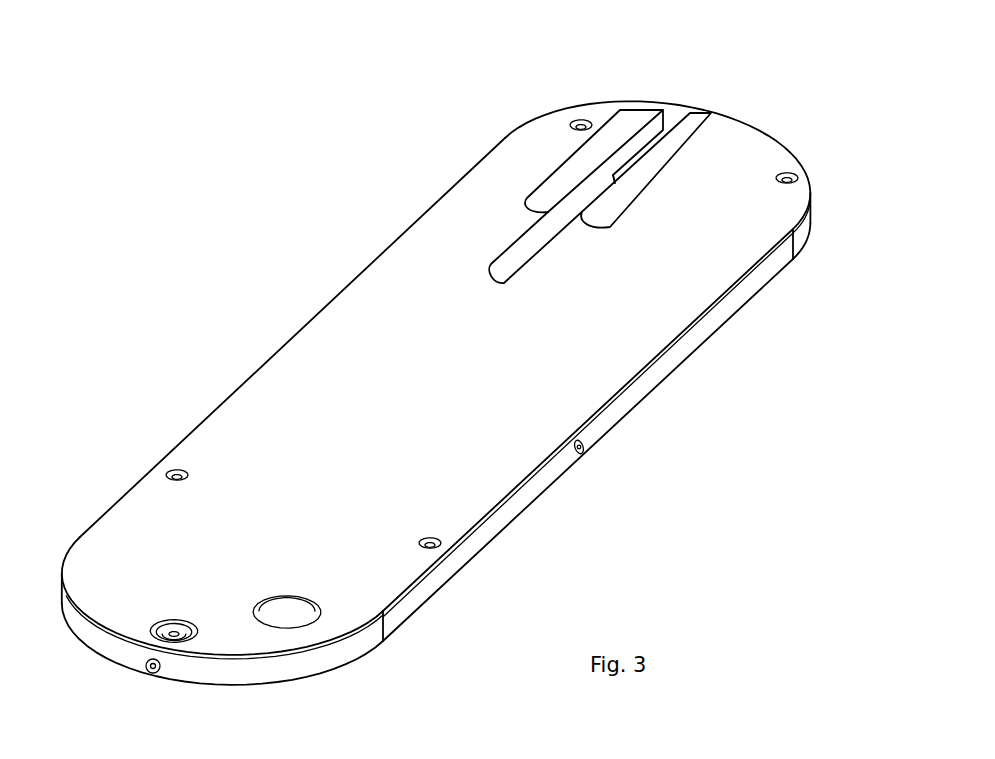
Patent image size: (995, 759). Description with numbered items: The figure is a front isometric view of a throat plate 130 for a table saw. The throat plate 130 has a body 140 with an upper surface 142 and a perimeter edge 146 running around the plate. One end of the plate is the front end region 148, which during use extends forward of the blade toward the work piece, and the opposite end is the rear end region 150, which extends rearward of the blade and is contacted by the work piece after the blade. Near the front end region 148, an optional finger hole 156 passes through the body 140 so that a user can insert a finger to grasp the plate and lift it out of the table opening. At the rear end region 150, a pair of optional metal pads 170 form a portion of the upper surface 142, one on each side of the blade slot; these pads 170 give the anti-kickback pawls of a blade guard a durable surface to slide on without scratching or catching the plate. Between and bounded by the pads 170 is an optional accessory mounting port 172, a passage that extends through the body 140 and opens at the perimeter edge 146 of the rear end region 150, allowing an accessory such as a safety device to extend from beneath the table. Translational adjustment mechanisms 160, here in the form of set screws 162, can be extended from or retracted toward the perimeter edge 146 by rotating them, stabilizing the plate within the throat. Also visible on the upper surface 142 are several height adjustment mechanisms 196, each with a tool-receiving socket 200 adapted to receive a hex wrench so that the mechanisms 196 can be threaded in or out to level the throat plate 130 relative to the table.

The throat plate 130 is at (355, 177).
The body 140 is at (325, 302).
The upper surface 142 is at (557, 366).
The perimeter edge 146 is at (673, 357).
The front end region 148 is at (222, 643).
The rear end region 150 is at (742, 140).
The finger hole 156 is at (303, 618).
The translational adjustment mechanism 160 is at (138, 666).
The set screw 162 is at (150, 674).
The metal pad 170 is at (632, 118).
The accessory mounting port 172 is at (674, 120).
The height adjustment mechanism 196 is at (570, 135).
The tool-receiving socket 200 is at (578, 121).